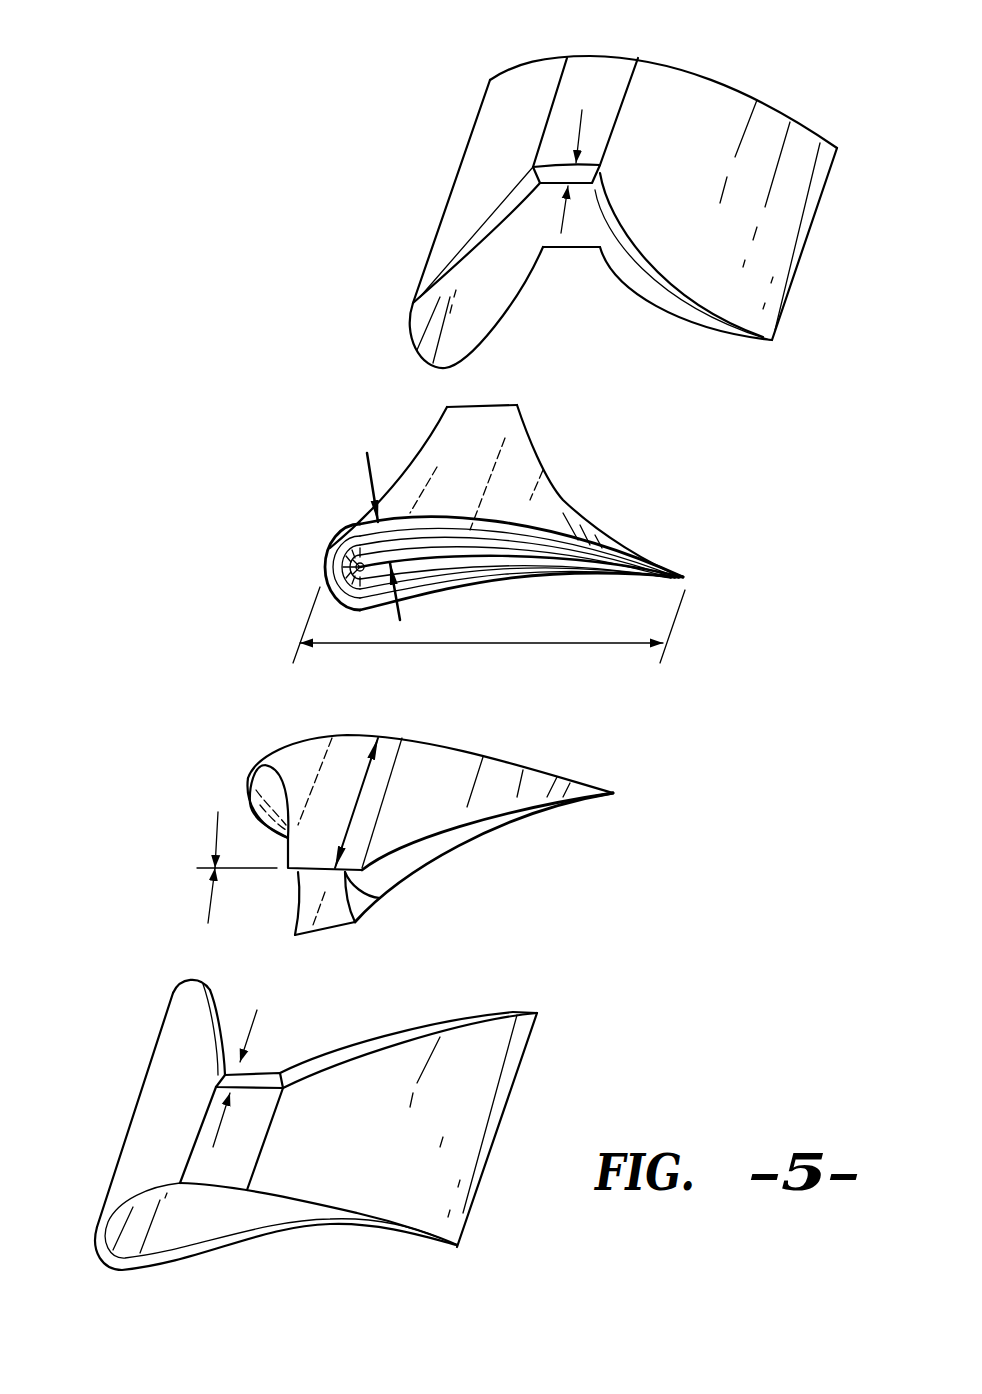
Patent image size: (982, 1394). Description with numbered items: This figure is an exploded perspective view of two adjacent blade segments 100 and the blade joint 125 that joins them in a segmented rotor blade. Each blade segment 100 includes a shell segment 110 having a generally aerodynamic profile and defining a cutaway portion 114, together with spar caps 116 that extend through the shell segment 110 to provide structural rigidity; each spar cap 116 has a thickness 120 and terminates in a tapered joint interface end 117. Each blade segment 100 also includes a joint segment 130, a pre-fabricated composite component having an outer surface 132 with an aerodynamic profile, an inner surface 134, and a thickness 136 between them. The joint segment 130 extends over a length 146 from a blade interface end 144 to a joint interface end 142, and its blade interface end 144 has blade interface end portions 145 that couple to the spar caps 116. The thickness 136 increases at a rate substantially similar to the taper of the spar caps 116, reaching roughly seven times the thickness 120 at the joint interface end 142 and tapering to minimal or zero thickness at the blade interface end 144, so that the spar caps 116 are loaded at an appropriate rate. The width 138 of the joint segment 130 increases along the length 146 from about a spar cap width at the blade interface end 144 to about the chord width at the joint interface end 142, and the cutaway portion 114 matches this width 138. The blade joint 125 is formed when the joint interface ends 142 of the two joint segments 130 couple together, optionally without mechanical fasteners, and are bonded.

The blade segment 100 is at (318, 217).
The shell segment 110 is at (503, 107).
The cutaway portion 114 is at (567, 263).
The spar cap 116 is at (598, 70).
The tapered joint interface end 117 is at (538, 183).
The thickness 120 is at (582, 120).
The blade joint 125 is at (653, 697).
The joint segment 130 is at (337, 393).
The outer surface 132 is at (447, 427).
The inner surface 134 is at (305, 895).
The thickness 136 is at (373, 480).
The width 138 is at (503, 647).
The joint interface end 142 is at (326, 572).
The blade interface end 144 is at (520, 400).
The blade interface end portion 145 is at (302, 928).
The length 146 is at (363, 797).